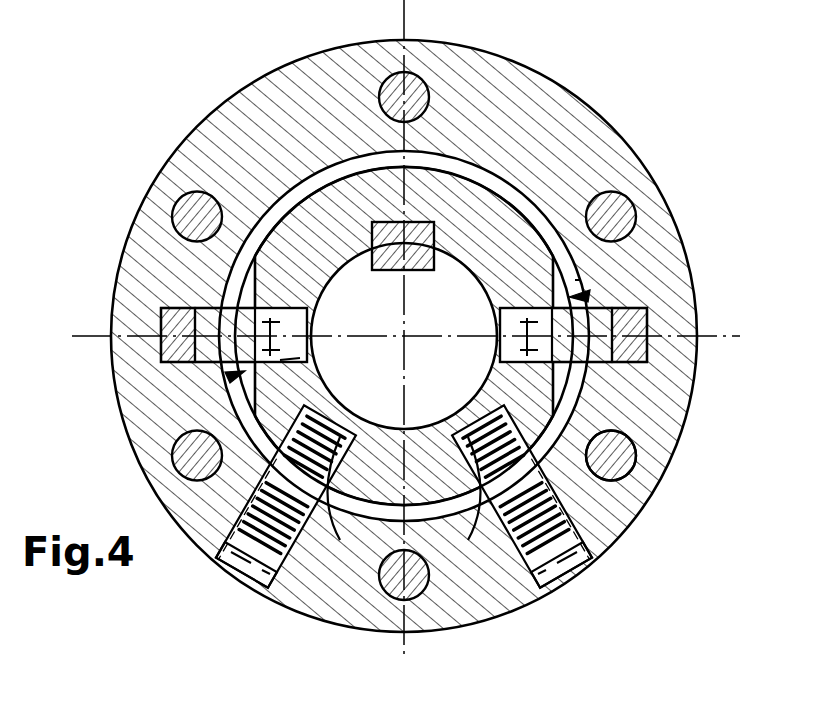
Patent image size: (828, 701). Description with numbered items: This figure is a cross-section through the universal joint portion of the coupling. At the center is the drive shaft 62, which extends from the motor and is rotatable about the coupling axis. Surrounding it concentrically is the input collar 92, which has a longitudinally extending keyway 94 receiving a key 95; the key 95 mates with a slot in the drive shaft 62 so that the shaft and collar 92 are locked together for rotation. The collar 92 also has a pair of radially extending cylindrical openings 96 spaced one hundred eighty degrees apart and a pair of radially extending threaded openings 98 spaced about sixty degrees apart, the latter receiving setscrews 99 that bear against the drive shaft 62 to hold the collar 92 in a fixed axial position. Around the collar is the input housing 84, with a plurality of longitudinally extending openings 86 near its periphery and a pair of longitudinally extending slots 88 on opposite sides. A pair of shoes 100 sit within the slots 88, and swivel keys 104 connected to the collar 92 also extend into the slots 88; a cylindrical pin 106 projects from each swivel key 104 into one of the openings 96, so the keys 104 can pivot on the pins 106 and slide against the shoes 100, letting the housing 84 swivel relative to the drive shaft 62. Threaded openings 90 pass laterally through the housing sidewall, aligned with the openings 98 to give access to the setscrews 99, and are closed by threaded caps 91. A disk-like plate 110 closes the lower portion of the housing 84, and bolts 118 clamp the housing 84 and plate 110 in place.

The drive shaft 62 is at (323, 210).
The input housing 84 is at (547, 93).
The longitudinally extending openings 86 is at (673, 230).
The longitudinally extending slots 88 is at (160, 350).
The threaded openings 90 is at (290, 553).
The threaded caps 91 is at (222, 565).
The input collar 92 is at (350, 300).
The keyway 94 is at (383, 237).
The key 95 is at (417, 240).
The radially extending cylindrical openings 96 is at (200, 293).
The radially extending threaded openings 98 is at (348, 480).
The setscrews 99 is at (365, 470).
The shoes 100 is at (167, 313).
The swivel keys 104 is at (240, 373).
The cylindrical pin 106 is at (300, 358).
The disk-like plate 110 is at (513, 203).
The bolts 118 is at (610, 460).